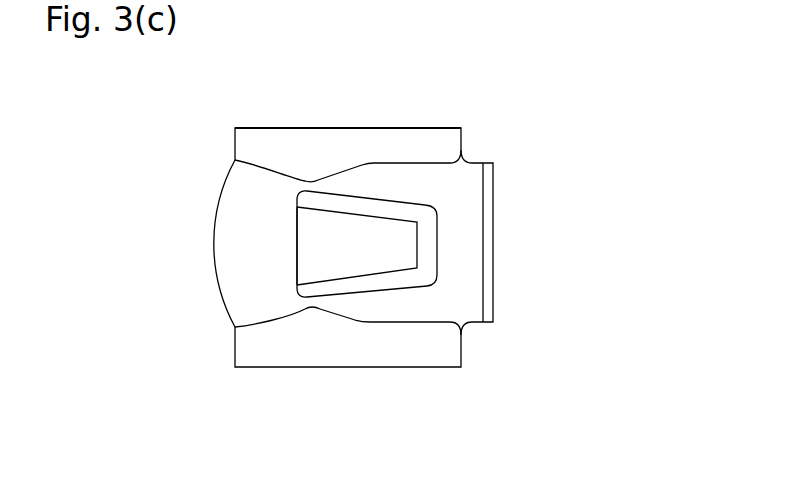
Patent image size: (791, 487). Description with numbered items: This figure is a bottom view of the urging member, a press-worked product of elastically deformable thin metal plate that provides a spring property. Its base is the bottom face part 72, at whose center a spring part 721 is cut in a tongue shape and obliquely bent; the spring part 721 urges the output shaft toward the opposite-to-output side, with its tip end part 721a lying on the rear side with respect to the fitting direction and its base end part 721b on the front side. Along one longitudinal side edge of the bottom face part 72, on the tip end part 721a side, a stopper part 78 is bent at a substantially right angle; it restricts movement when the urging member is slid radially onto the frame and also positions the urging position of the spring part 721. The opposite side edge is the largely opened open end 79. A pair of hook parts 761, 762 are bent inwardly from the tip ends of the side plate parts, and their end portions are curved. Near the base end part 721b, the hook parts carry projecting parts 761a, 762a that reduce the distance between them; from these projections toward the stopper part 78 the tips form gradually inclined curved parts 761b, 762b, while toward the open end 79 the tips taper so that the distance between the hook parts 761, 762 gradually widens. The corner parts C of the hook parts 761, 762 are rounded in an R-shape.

The bottom face part 72 is at (233, 215).
The stopper part 78 is at (490, 248).
The open end 79 is at (205, 288).
The spring part 721 is at (355, 309).
The tip end part 721a is at (417, 248).
The base end part 721b is at (297, 242).
The hook part 761 is at (250, 352).
The projecting part 761a is at (312, 309).
The curved part 761b is at (353, 318).
The hook part 762 is at (262, 141).
The projecting part 762a is at (312, 182).
The curved part 762b is at (352, 168).
The corner parts C is at (233, 160).